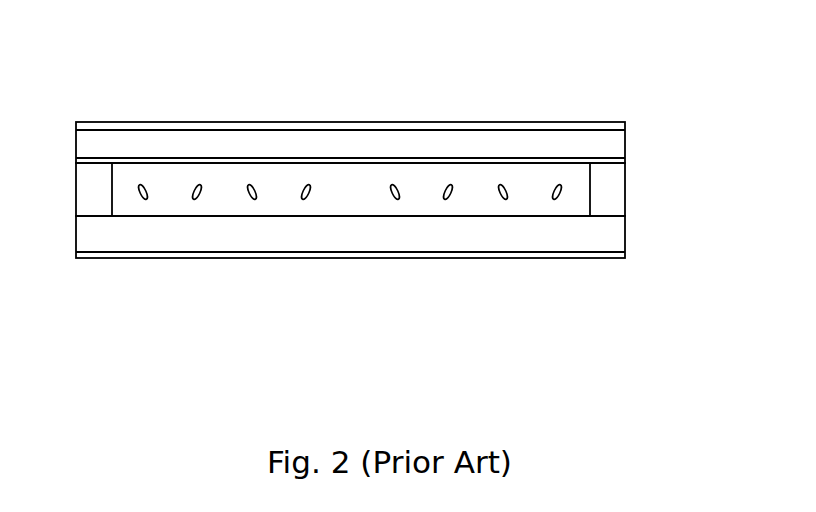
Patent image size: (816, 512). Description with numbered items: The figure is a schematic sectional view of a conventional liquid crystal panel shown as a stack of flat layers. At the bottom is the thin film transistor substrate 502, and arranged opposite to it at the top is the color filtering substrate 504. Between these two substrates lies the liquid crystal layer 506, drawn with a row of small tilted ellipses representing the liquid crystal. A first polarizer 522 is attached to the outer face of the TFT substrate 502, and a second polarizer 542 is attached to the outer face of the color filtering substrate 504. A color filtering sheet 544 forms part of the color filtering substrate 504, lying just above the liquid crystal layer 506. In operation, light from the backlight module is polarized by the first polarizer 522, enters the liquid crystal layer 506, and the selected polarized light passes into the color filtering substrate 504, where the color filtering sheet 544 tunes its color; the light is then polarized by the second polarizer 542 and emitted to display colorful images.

The thin film transistor (TFT) substrate 502 is at (625, 244).
The color filtering substrate 504 is at (625, 149).
The liquid crystal layer 506 is at (580, 194).
The first polarizer 522 is at (328, 255).
The second polarizer 542 is at (495, 127).
The color filtering sheet 544 is at (300, 160).